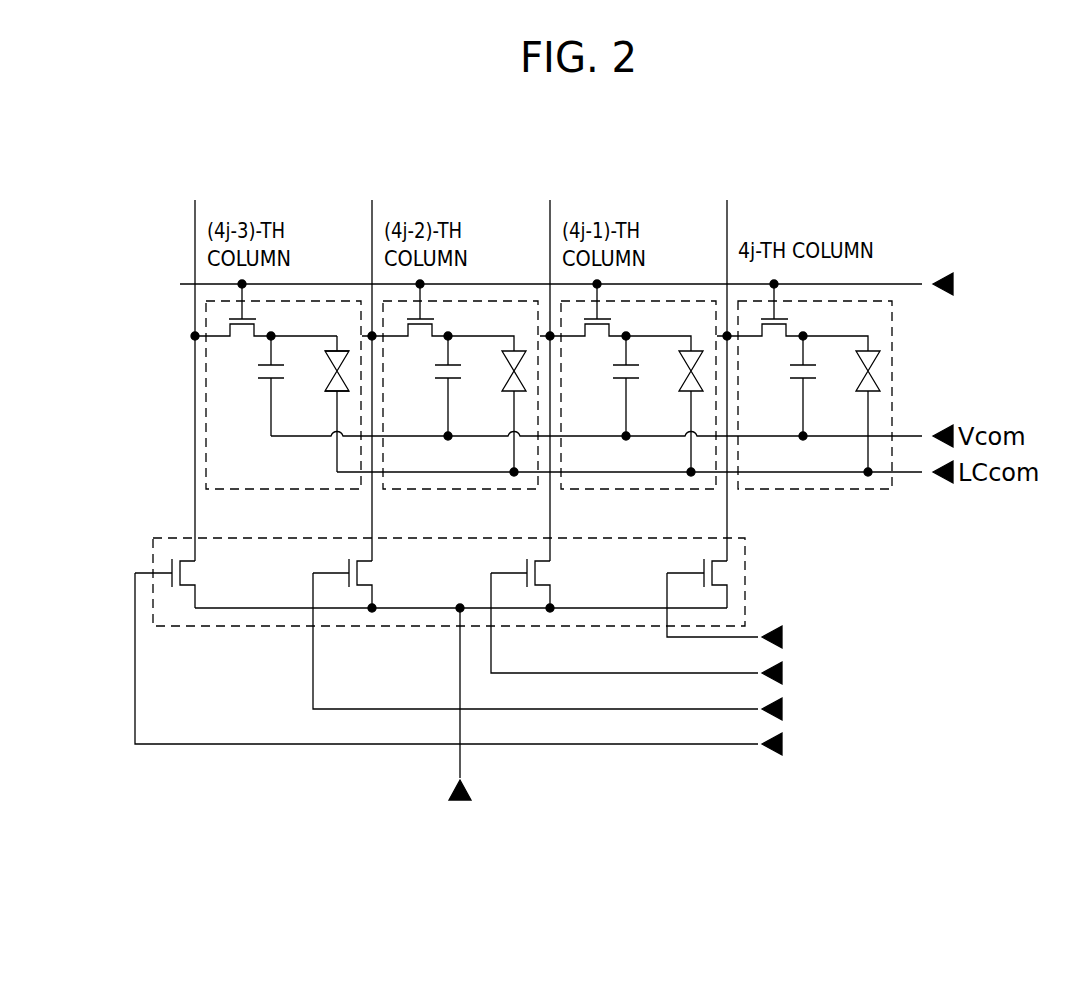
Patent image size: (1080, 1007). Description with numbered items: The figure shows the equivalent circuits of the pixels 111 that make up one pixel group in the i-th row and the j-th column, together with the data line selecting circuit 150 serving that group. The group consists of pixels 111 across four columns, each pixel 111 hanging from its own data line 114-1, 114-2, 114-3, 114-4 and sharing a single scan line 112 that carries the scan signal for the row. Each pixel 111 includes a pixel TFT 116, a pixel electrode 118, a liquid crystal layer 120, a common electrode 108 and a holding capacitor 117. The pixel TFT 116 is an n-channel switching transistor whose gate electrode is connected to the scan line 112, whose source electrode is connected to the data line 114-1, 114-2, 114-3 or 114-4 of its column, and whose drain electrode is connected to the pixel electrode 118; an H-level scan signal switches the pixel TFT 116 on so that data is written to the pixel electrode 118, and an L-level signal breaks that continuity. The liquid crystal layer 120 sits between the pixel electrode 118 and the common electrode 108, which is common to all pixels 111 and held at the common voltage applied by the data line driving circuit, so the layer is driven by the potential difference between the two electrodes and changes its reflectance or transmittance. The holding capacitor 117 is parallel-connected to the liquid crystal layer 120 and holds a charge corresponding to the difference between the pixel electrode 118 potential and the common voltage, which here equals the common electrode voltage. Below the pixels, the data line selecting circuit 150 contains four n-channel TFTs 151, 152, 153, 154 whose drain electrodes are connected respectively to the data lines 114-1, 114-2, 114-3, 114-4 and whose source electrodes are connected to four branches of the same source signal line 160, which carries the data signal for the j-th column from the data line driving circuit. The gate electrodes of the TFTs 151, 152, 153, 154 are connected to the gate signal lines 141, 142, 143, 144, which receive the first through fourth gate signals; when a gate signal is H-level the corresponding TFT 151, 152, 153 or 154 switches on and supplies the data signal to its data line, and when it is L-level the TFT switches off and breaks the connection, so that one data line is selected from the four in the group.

The common electrode 108 is at (338, 391).
The pixel 111 is at (315, 492).
The scan line 112 is at (882, 284).
The data line 114-1 is at (196, 210).
The data line 114-2 is at (373, 210).
The data line 114-3 is at (551, 210).
The data line 114-4 is at (728, 210).
The pixel TFT 116 is at (241, 338).
The holding capacitor 117 is at (257, 380).
The pixel electrode 118 is at (345, 351).
The liquid crystal layer 120 is at (335, 373).
The gate signal line 141 is at (624, 744).
The gate signal line 142 is at (630, 709).
The gate signal line 143 is at (630, 673).
The gate signal line 144 is at (686, 637).
The data line selecting circuit 150 is at (745, 538).
The TFT 151 is at (198, 573).
The TFT 152 is at (375, 573).
The TFT 153 is at (552, 573).
The TFT 154 is at (704, 565).
The source signal line 160 is at (460, 755).